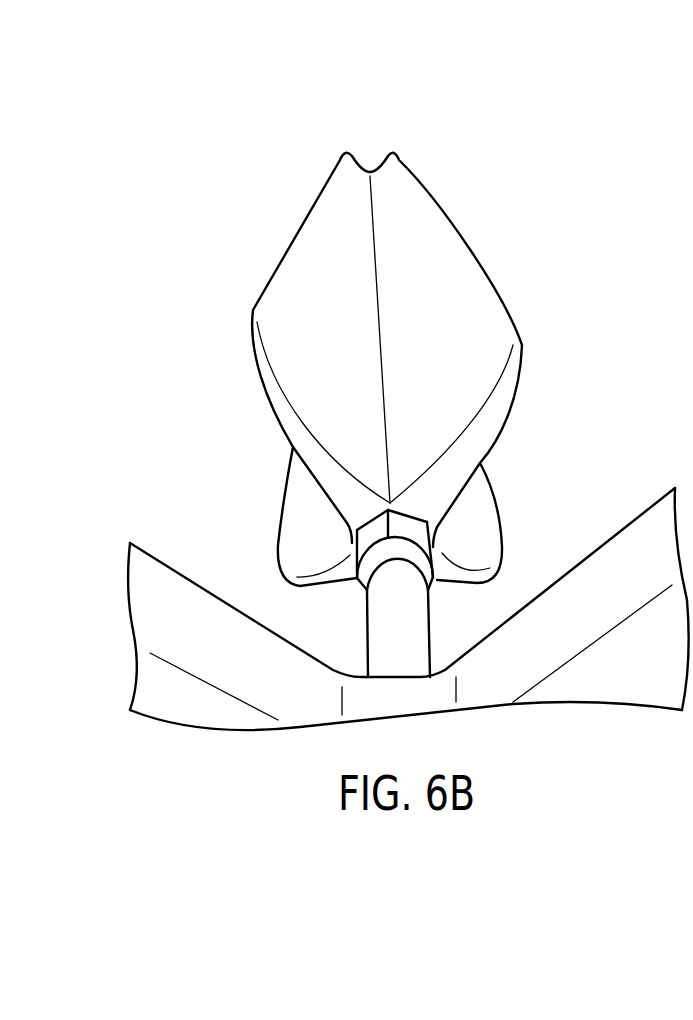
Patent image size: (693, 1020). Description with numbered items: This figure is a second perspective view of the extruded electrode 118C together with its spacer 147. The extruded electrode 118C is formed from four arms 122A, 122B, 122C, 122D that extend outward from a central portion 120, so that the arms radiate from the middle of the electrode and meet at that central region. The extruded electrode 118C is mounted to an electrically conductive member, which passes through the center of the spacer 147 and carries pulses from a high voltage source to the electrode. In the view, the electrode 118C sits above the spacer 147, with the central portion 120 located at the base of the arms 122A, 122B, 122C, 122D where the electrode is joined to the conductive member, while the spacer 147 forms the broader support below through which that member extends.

The extruded electrode 118C is at (128, 118).
The central portion 120 is at (345, 500).
The arm 122A is at (252, 310).
The arm 122B is at (487, 523).
The arm 122C is at (287, 547).
The arm 122D is at (464, 238).
The spacer 147 is at (148, 623).